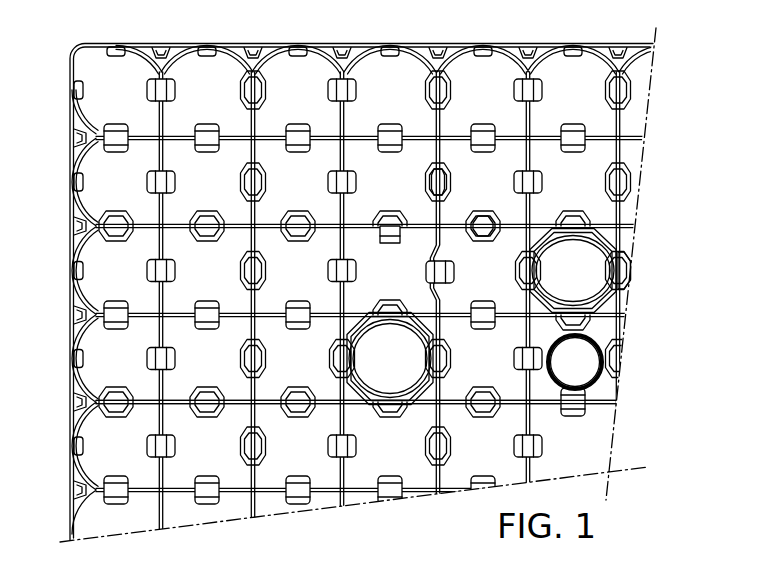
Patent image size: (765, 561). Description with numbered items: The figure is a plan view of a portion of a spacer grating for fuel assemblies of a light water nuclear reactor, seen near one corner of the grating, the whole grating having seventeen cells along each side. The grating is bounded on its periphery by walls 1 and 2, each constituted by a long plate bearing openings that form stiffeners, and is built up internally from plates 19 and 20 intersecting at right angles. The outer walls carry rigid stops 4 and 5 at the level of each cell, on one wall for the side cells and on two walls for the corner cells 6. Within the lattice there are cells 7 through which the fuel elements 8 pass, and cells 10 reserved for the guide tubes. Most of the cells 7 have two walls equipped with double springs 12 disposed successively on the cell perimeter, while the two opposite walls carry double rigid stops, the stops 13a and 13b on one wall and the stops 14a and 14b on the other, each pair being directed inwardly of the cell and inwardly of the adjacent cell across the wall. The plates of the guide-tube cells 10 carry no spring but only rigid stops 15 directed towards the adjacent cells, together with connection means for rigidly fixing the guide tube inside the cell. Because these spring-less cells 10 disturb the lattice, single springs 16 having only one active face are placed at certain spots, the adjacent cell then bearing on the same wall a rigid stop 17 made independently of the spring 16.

The peripheral wall 1 is at (653, 45).
The peripheral wall 2 is at (70, 400).
The rigid stop 4 is at (72, 288).
The rigid stop 5 is at (210, 43).
The corner cell 6 is at (102, 72).
The cell for fuel element 7 is at (607, 390).
The fuel element 8 is at (600, 337).
The cell for guide tube 10 is at (584, 284).
The double spring 12 is at (533, 180).
The rigid stop 13a is at (447, 173).
The rigid stop 13b is at (428, 178).
The rigid stop 14a is at (482, 213).
The rigid stop 14b is at (480, 243).
The rigid stop 15 is at (628, 255).
The single spring 16 is at (392, 244).
The rigid stop 17 is at (390, 212).
The plate 19 is at (518, 410).
The plate 20 is at (620, 217).